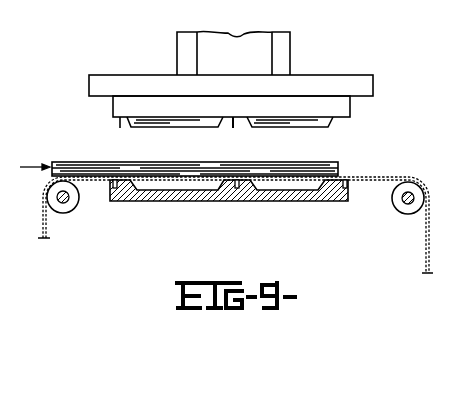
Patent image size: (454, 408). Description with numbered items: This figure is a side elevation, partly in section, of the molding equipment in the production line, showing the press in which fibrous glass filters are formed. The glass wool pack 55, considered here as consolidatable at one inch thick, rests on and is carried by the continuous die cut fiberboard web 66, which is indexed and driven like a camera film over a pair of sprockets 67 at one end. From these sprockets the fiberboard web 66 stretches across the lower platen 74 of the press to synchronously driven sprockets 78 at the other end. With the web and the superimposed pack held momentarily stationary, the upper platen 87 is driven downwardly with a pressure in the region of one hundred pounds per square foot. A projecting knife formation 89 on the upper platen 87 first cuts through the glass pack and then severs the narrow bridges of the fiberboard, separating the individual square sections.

The glass wool pack 55 is at (80, 162).
The die cut fiberboard web 66 is at (47, 228).
The sprockets 67 is at (73, 211).
The lower platen 74 is at (265, 202).
The synchronously driven sprockets 78 is at (402, 214).
The upper platen 87 is at (113, 105).
The projecting knife formation 89 is at (234, 122).